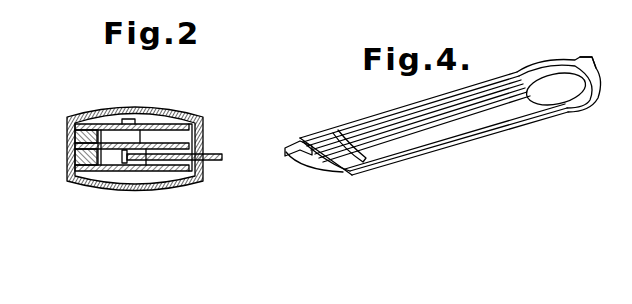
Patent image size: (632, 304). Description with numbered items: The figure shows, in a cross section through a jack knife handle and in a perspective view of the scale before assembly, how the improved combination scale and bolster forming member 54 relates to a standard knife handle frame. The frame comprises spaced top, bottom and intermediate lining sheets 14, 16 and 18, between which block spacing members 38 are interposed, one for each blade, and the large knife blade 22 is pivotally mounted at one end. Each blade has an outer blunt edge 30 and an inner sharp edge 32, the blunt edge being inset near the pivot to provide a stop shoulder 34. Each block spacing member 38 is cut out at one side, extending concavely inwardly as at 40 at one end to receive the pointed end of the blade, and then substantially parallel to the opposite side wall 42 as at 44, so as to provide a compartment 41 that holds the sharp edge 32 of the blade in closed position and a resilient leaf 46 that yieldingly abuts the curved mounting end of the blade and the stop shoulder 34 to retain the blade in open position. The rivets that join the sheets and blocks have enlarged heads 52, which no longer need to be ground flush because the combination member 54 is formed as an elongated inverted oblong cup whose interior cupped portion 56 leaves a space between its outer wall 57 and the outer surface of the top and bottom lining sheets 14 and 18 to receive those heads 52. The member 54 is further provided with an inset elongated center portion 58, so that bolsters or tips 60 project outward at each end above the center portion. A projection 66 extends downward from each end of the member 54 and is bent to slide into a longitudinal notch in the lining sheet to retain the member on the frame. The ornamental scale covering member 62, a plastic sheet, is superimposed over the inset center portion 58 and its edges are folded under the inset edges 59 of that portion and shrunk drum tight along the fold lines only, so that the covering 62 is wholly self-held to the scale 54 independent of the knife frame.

In FIG. 2, the top lining sheet 14 is at (205, 128).
In FIG. 2, the bottom lining sheet 16 is at (191, 177).
In FIG. 2, the intermediate lining sheet 18 is at (187, 182).
In FIG. 2, the large knife blade 22 is at (198, 168).
In FIG. 2, the outer blunt edge 30 is at (222, 157).
In FIG. 2, the inner sharp edge 32 is at (114, 172).
In FIG. 2, the stop shoulder 34 is at (40, 0).
In FIG. 2, the block spacing member 38 is at (68, 147).
In FIG. 2, the concave cut out portion 40 is at (100, 125).
In FIG. 2, the compartment 41 is at (196, 139).
In FIG. 2, the opposite side wall 42 is at (68, 135).
In FIG. 2, the parallel cut out portion 44 is at (70, 126).
In FIG. 2, the resilient leaf 46 is at (70, 172).
In FIG. 2, the rivet heads 52 is at (150, 118).
In FIG. 2, the combination scale and bolster forming member 54 is at (142, 124).
In FIG. 4, the combination scale and bolster forming member 54 is at (412, 105).
In FIG. 4, the interior cupped portion 56 is at (470, 100).
In FIG. 2, the outer wall 57 is at (176, 108).
In FIG. 4, the inset elongated center portion 58 is at (508, 130).
In FIG. 4, the inset edges 59 is at (375, 125).
In FIG. 4, the bolsters or tips 60 is at (362, 172).
In FIG. 2, the ornamental scale covering member 62 is at (122, 106).
In FIG. 4, the projection 66 is at (306, 158).